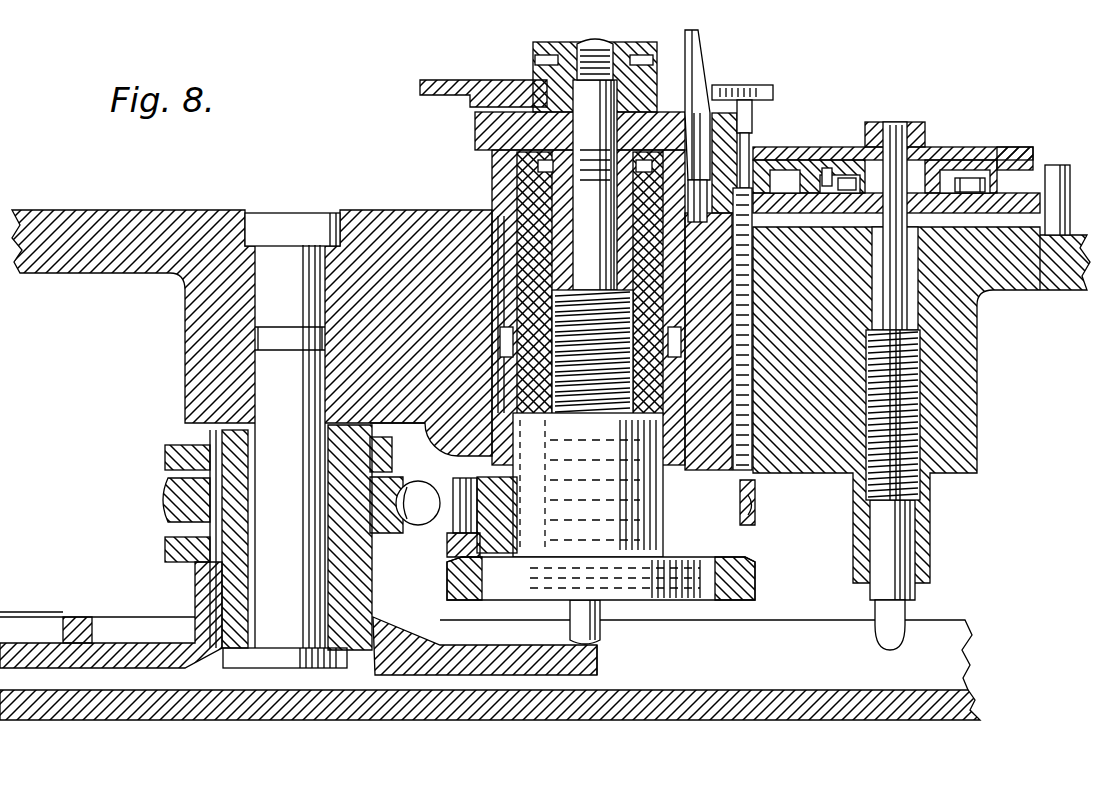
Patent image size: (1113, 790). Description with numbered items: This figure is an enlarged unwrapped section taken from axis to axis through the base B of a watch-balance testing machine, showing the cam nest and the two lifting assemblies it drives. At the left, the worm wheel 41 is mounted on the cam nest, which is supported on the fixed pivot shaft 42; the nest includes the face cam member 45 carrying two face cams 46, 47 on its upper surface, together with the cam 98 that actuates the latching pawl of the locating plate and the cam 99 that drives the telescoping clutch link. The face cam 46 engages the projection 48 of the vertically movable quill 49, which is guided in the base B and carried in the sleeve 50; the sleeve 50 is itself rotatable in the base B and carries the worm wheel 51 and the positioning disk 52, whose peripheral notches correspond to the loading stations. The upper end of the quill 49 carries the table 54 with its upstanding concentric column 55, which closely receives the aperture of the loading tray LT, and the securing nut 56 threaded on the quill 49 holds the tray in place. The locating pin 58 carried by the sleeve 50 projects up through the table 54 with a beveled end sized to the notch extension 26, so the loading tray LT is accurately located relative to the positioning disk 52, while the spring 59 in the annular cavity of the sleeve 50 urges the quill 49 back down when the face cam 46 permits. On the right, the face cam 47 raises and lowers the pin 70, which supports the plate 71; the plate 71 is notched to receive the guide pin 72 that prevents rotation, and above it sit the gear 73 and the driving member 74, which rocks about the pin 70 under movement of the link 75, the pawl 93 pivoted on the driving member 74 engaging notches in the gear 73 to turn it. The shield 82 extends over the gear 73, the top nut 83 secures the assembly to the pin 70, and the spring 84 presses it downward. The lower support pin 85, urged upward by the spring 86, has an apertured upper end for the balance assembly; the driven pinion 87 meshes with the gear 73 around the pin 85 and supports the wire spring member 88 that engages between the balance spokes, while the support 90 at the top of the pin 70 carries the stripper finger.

The base B is at (965, 435).
The loading tray LT is at (432, 82).
The notch extension 26 is at (695, 105).
The worm wheel 41 is at (172, 491).
The pivot shaft 42 is at (285, 440).
The face cam member 45 is at (420, 662).
The face cam 46 is at (20, 600).
The face cam 47 is at (115, 598).
The projection 48 is at (603, 626).
The quill 49 is at (593, 185).
The sleeve 50 is at (528, 240).
The worm wheel 51 is at (760, 506).
The positioning disk 52 is at (760, 580).
The table 54 is at (490, 130).
The column 55 is at (555, 95).
The securing nut 56 is at (587, 48).
The locating pin 58 is at (700, 62).
The spring 59 is at (583, 310).
The pin 70 is at (900, 305).
The plate 71 is at (1015, 292).
The guide pin 72 is at (1056, 170).
The gear 73 is at (1015, 152).
The driving member 74 is at (985, 140).
The link 75 is at (987, 186).
The shield 82 is at (922, 150).
The top nut 83 is at (905, 122).
The spring 84 is at (900, 395).
The lower support pin 85 is at (755, 120).
The spring 86 is at (760, 442).
The driven pinion 87 is at (760, 168).
The wire spring member 88 is at (775, 93).
The support 90 is at (826, 165).
The pawl 93 is at (846, 175).
The cam 98 is at (172, 541).
The cam 99 is at (172, 452).